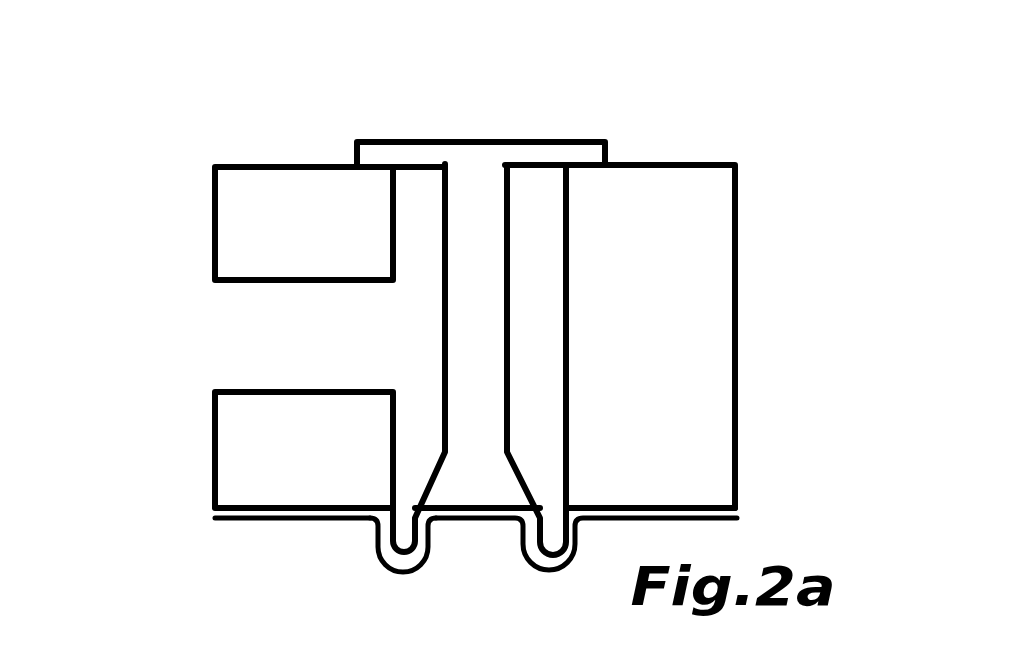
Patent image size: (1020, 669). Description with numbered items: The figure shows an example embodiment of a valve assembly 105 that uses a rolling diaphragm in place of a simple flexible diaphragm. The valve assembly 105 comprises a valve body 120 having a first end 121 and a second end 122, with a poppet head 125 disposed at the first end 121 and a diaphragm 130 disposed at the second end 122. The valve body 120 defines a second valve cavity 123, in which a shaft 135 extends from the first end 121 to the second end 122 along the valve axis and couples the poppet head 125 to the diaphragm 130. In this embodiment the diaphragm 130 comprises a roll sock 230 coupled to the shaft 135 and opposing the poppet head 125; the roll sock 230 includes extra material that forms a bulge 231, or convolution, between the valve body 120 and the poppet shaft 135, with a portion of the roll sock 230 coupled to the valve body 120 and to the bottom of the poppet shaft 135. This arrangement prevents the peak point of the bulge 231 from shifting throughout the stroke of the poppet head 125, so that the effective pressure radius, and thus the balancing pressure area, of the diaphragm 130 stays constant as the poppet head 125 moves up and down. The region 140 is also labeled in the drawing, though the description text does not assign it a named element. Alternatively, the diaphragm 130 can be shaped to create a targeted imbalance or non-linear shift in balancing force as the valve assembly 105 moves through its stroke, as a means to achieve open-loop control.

The valve assembly 105 is at (734, 112).
The valve body 120 is at (214, 185).
The first end 121 is at (245, 166).
The second end 122 is at (735, 498).
The second valve cavity 123 is at (542, 333).
The poppet head 125 is at (592, 141).
The diaphragm 130 is at (218, 522).
The shaft 135 is at (440, 353).
The gap 140 is at (228, 283).
The rolling diaphragm 230 is at (305, 522).
The bulge 231 is at (390, 573).